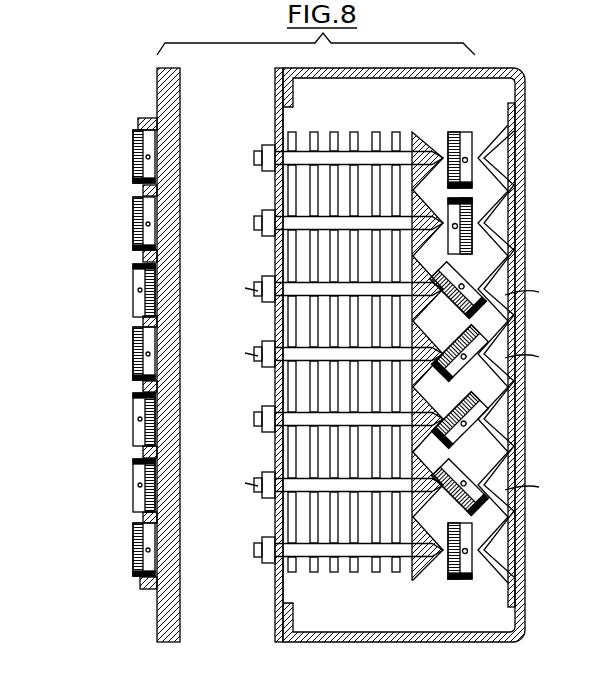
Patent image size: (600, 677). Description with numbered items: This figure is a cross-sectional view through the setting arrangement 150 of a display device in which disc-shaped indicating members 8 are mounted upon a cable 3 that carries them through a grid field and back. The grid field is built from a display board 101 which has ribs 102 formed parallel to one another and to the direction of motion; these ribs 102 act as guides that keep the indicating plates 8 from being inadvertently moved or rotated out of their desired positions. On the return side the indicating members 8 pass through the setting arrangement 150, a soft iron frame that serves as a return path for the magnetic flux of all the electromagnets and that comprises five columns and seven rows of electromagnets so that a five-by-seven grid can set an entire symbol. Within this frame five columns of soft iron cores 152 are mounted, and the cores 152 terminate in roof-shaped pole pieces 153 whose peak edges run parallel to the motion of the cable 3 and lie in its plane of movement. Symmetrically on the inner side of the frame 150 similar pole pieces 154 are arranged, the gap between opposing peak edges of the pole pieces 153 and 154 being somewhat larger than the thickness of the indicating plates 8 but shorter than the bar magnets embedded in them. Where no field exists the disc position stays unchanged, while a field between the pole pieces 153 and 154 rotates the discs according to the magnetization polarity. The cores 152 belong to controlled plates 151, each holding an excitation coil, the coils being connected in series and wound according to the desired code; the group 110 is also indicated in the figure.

The cable 3 is at (458, 356).
The indicating members 8 is at (463, 134).
The display board 101 is at (179, 611).
The ribs 102 is at (97, 133).
The magnet unit 110 is at (95, 369).
The setting arrangement 150 is at (524, 430).
The controlled plates 151 is at (333, 574).
The soft iron cores 152 is at (258, 220).
The pole pieces 153 is at (425, 140).
The pole pieces 154 is at (503, 165).